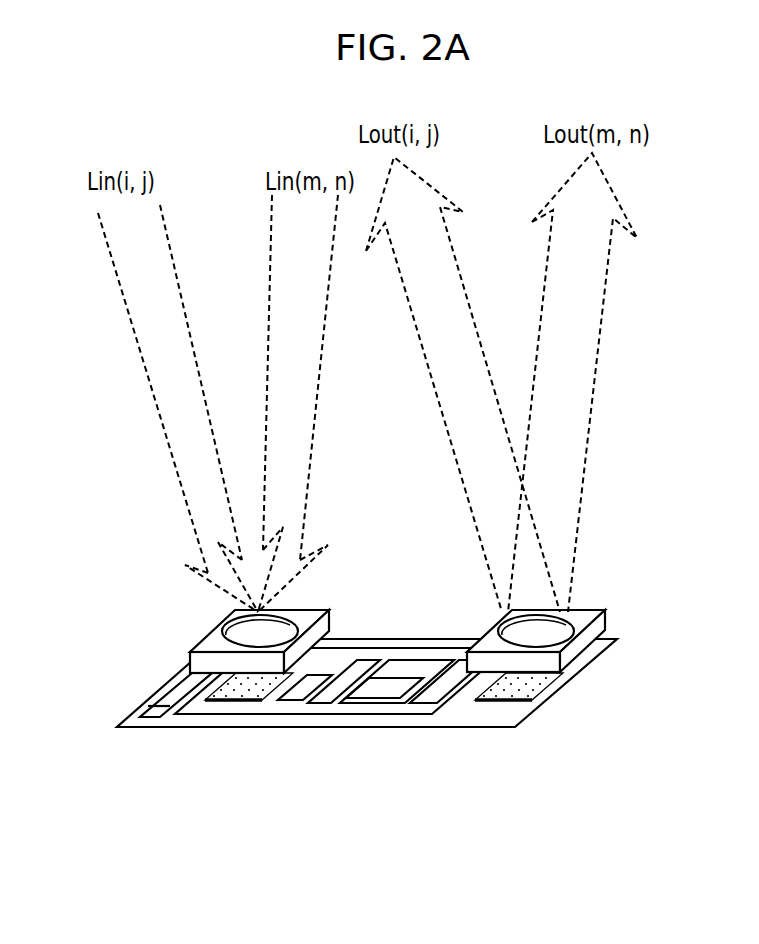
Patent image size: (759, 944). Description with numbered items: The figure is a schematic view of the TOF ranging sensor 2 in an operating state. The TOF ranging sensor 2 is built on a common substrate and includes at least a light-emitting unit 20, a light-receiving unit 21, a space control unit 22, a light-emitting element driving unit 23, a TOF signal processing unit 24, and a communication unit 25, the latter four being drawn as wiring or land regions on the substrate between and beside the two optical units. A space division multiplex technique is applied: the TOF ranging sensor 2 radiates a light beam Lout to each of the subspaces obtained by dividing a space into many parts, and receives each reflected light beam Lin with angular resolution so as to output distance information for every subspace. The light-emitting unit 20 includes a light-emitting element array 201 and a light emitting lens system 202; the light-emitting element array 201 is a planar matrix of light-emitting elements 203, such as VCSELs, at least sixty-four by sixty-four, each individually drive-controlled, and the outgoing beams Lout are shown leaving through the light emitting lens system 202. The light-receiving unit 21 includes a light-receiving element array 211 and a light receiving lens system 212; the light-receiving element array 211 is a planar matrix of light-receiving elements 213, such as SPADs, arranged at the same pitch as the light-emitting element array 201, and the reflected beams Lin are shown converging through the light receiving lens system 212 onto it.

The TOF ranging sensor 2 is at (603, 558).
The light-emitting unit 20 is at (590, 651).
The light-emitting element array 201 is at (535, 683).
The light emitting lens system 202 is at (553, 633).
The light-emitting element 203 is at (515, 702).
The light-receiving unit 21 is at (200, 641).
The light-receiving element array 211 is at (260, 678).
The light receiving lens system 212 is at (236, 640).
The light-receiving element 213 is at (168, 704).
The space control unit 22 is at (403, 687).
The light-emitting element driving unit 23 is at (447, 675).
The TOF signal processing unit 24 is at (357, 665).
The communication unit 25 is at (150, 704).